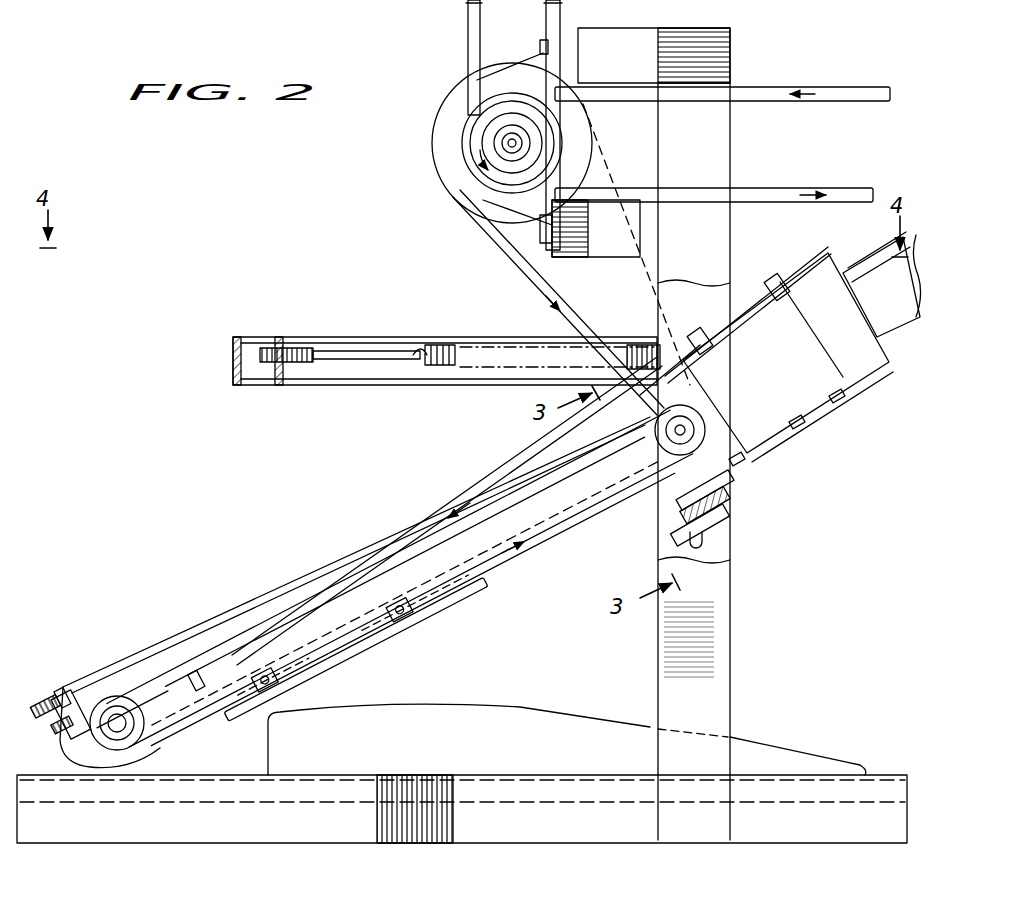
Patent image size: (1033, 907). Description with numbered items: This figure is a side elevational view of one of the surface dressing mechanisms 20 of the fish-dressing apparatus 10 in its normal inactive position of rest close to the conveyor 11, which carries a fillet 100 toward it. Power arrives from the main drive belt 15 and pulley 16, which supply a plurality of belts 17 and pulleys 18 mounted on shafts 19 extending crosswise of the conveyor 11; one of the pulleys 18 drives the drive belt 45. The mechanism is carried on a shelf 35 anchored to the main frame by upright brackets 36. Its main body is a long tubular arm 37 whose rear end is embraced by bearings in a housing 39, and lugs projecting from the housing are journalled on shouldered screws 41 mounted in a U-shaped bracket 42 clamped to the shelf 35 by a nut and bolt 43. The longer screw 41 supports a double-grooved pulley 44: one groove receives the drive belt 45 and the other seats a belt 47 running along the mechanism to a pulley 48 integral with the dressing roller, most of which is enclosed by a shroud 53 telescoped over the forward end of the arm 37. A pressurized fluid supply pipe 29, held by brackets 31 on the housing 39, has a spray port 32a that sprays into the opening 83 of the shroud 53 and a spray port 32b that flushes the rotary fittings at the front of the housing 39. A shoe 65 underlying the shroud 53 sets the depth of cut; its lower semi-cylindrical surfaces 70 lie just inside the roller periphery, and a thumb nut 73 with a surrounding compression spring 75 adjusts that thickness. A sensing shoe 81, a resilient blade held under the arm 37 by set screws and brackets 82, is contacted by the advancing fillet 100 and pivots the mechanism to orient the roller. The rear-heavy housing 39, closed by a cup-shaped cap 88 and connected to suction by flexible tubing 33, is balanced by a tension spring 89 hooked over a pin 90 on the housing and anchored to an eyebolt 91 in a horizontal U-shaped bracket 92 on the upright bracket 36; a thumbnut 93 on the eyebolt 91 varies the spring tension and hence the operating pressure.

The apparatus 10 is at (288, 256).
The conveyor 11 is at (240, 760).
The main drive belt 15 is at (466, 39).
The pulley 16 is at (468, 137).
The belts 17 is at (778, 86).
The pulleys 18 is at (448, 160).
The shafts 19 is at (510, 143).
The surface dressing mechanism 20 is at (246, 574).
The pressurized fluid supply pipe 29 is at (490, 480).
The brackets 31 is at (779, 290).
The spray port 32a is at (115, 680).
The spray port 32b is at (632, 345).
The flexible tubing 33 is at (880, 245).
The shelf 35 is at (738, 505).
The upright brackets 36 is at (730, 143).
The tubular arm 37 is at (554, 482).
The housing 39 is at (770, 442).
The shouldered screws 41 is at (684, 428).
The U-shaped bracket 42 is at (735, 488).
The nut and bolt 43 is at (740, 527).
The pulley 44 is at (658, 448).
The drive belt 45 is at (495, 250).
The belt 47 is at (307, 588).
The pulley 48 is at (120, 740).
The shroud 53 is at (122, 662).
The shoe 65 is at (74, 756).
The semi-cylindrical surfaces 70 is at (103, 747).
The thumb nut 73 is at (50, 692).
The compression spring 75 is at (50, 703).
The sensing shoe 81 is at (432, 616).
The set screws and brackets 82 is at (392, 606).
The opening 83 is at (171, 665).
The cup-shaped cap 88 is at (818, 255).
The tension spring 89 is at (440, 345).
The pin 90 is at (674, 340).
The eyebolt 91 is at (372, 351).
The U-shaped bracket 92 is at (312, 337).
The thumbnut 93 is at (268, 348).
The fillet 100 is at (586, 714).